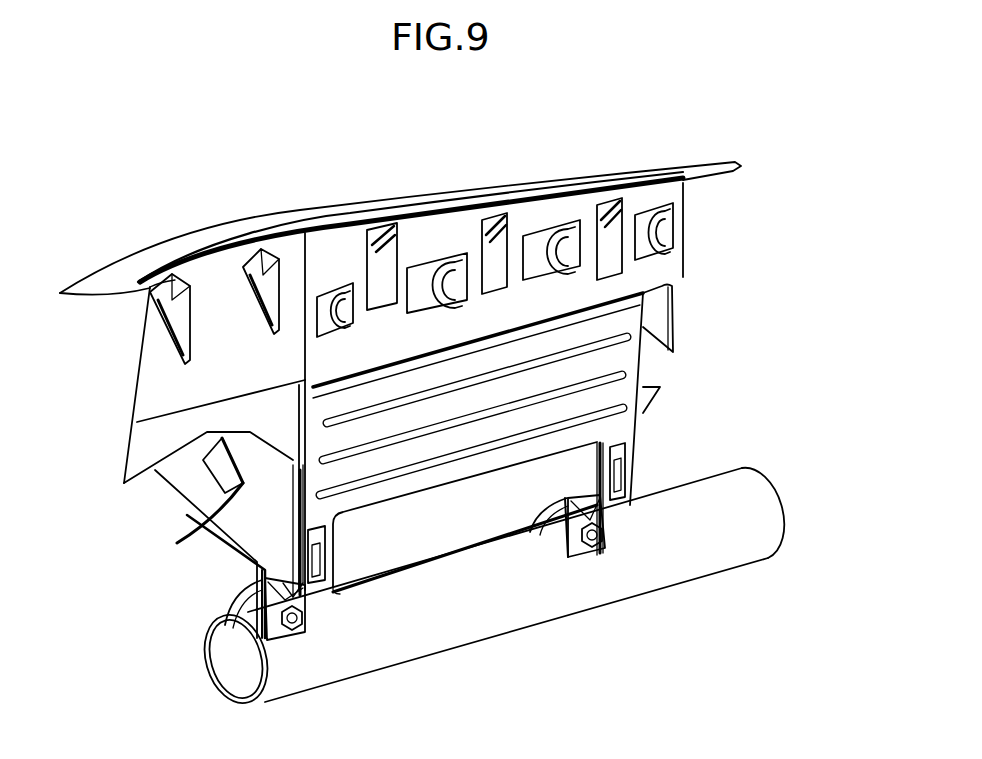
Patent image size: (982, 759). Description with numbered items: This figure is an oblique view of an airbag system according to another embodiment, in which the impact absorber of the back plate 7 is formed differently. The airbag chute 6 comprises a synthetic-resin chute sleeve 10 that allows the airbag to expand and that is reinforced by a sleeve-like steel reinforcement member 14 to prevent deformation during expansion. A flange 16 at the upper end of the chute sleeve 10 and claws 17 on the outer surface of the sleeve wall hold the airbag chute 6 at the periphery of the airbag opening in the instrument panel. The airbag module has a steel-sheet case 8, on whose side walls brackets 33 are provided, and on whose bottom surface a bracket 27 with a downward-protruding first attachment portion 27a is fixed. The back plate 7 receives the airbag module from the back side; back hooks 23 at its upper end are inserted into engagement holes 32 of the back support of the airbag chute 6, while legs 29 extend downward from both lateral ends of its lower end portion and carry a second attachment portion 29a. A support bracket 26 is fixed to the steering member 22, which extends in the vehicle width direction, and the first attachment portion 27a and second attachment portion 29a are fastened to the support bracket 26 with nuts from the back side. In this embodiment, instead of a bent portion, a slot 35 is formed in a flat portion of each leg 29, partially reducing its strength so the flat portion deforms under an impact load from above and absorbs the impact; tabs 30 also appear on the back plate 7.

The airbag chute 6 is at (702, 170).
The back plate 7 is at (640, 368).
The case 8 is at (453, 522).
The chute sleeve 10 is at (125, 447).
The reinforcement member 14 is at (135, 378).
The flange 16 is at (213, 222).
The claws 17 is at (155, 315).
The steering member 22 is at (765, 505).
The back hooks 23 is at (463, 248).
The support bracket 26 is at (243, 592).
The bracket 27 is at (235, 545).
The first attachment portion 27a is at (265, 618).
The legs 29 is at (640, 462).
The second attachment portion 29a is at (293, 640).
The tab 30 is at (655, 322).
The engagement holes 32 is at (360, 283).
The bracket 33 is at (185, 527).
The slot 35 is at (322, 583).